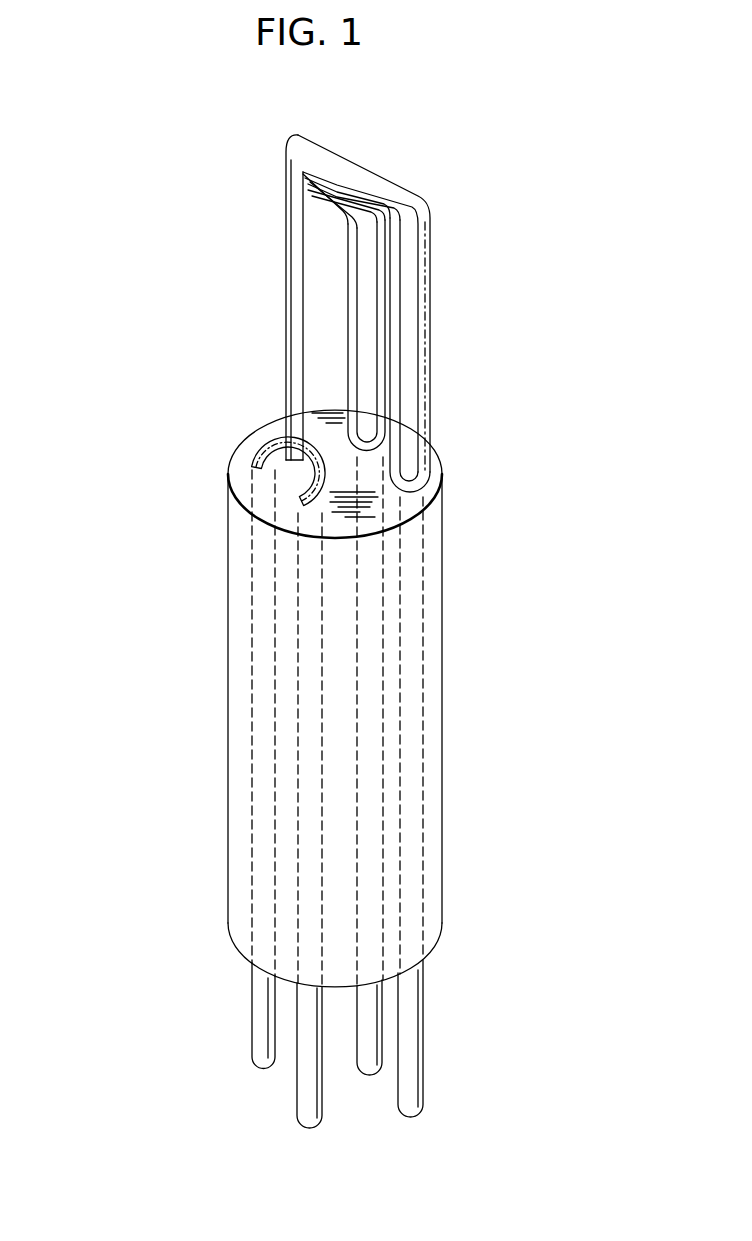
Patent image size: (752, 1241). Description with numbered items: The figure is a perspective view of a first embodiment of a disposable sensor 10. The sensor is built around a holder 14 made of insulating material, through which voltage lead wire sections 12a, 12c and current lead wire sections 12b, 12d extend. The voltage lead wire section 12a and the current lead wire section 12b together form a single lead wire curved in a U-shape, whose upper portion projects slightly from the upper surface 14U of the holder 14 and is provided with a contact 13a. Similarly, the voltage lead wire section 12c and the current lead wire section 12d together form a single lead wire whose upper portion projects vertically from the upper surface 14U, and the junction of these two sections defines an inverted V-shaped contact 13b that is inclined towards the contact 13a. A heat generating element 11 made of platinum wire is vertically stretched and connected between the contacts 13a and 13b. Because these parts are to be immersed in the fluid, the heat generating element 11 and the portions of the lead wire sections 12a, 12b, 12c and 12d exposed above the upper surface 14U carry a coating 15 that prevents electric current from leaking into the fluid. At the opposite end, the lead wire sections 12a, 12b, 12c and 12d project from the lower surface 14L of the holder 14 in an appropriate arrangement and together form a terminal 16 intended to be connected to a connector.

The disposable sensor 10 is at (249, 169).
The heat generating element 11 is at (293, 276).
The voltage lead wire section 12a is at (247, 443).
The current lead wire section 12b is at (260, 527).
The voltage lead wire section 12c is at (365, 362).
The current lead wire section 12d is at (405, 443).
The contact 13a is at (227, 470).
The inverted V-shaped contact 13b is at (361, 176).
The holder 14 is at (442, 677).
The upper surface 14U is at (272, 427).
The lower surface 14L is at (244, 960).
The coating 15 is at (432, 240).
The terminal 16 is at (187, 1109).